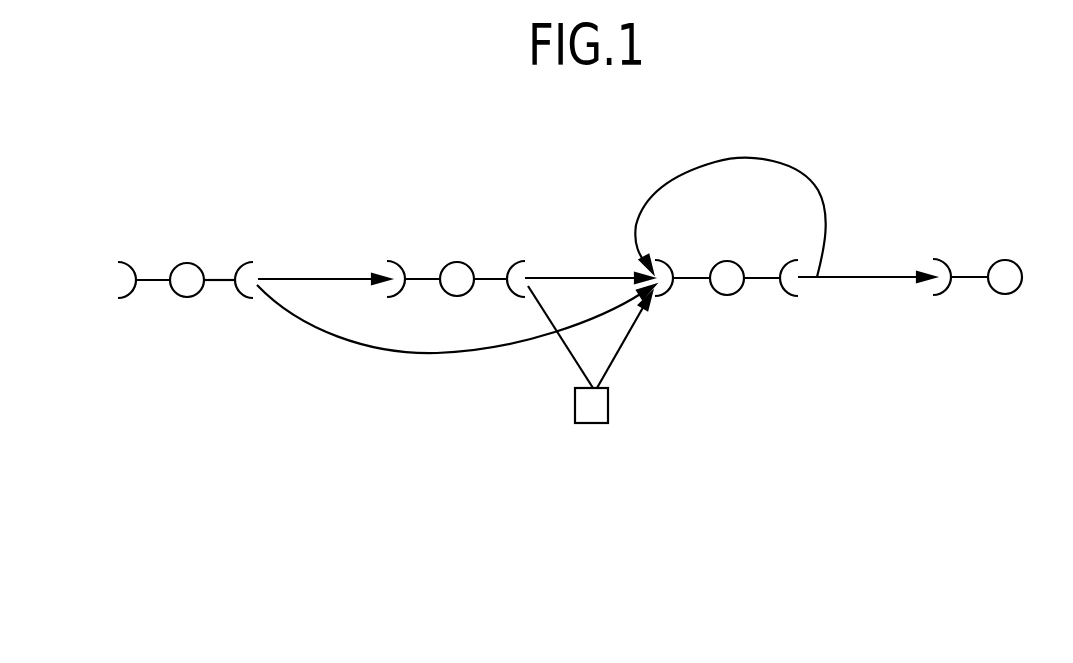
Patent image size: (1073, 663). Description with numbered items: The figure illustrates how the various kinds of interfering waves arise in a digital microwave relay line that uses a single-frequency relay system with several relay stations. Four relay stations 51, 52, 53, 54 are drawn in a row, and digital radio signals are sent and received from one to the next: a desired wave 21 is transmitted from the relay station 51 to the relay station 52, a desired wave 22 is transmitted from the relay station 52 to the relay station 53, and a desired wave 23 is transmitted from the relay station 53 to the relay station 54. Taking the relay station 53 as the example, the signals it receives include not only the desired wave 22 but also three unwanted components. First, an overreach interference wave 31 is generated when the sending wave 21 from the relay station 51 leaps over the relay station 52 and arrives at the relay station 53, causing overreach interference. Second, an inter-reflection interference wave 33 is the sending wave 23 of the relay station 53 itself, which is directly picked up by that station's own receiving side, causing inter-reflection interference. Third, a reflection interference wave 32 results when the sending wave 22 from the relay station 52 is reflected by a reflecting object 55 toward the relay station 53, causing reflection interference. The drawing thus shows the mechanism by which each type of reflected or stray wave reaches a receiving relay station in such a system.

The desired wave 21 is at (325, 278).
The desired wave 22 is at (605, 277).
The desired wave 23 is at (889, 276).
The overreach interference wave 31 is at (412, 352).
The reflection interference wave 32 is at (620, 348).
The inter-reflection interference wave 33 is at (787, 175).
The relay station 51 is at (199, 270).
The relay station 52 is at (482, 270).
The relay station 53 is at (740, 265).
The relay station 54 is at (1013, 261).
The reflecting object 55 is at (592, 423).